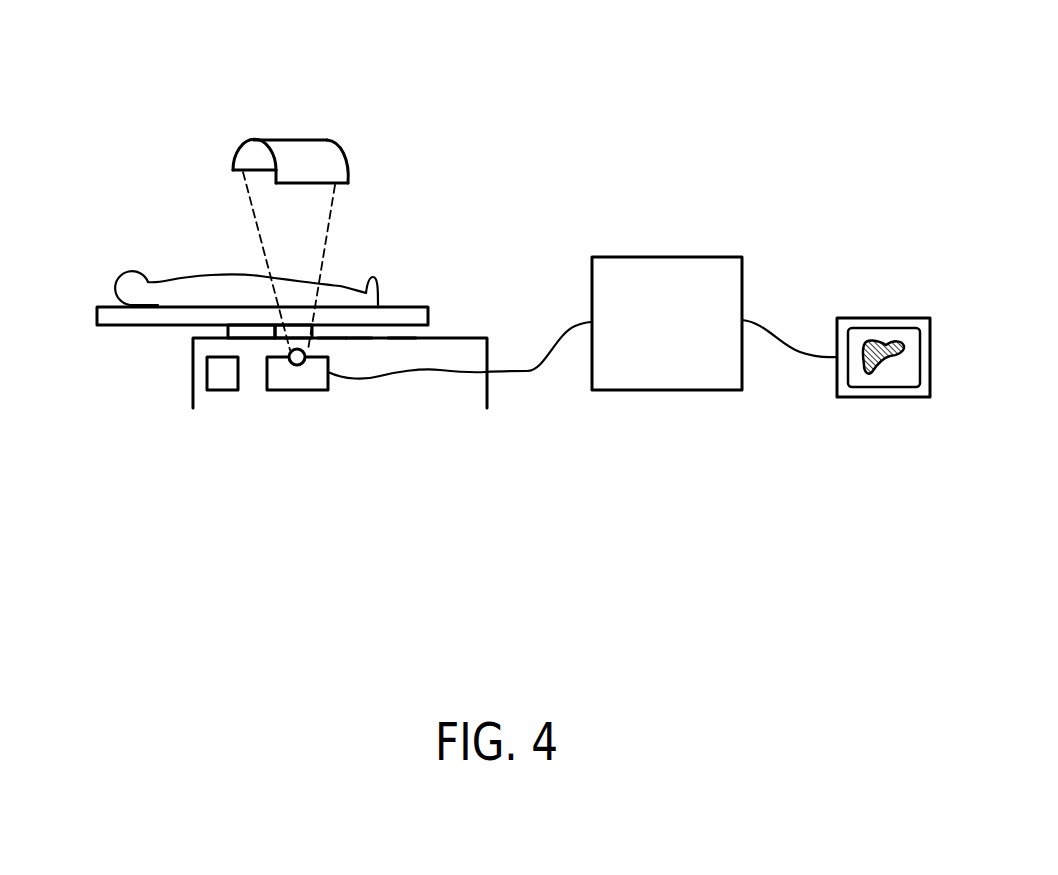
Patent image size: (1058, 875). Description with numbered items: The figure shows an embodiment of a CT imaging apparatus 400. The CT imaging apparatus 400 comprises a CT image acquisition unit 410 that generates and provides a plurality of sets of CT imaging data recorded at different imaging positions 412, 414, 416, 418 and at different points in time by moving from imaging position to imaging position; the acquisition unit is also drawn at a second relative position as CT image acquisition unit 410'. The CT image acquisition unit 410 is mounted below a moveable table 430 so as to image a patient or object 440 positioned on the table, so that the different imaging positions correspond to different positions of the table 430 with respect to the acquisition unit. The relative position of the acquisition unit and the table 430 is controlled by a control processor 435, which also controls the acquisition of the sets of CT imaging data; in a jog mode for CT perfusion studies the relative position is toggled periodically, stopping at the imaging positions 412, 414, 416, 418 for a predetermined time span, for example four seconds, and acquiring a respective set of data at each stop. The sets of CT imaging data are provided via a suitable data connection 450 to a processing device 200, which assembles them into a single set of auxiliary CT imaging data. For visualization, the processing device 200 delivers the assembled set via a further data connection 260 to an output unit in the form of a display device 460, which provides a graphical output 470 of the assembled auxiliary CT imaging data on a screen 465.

The CT imaging apparatus 400 is at (113, 73).
The CT image acquisition unit 410 is at (297, 439).
The CT image acquisition unit 410' is at (261, 231).
The imaging position 412 is at (251, 339).
The imaging position 414 is at (332, 339).
The imaging position 416 is at (357, 339).
The imaging position 418 is at (402, 339).
The moveable table 430 is at (112, 313).
The control processor 435 is at (215, 367).
The patient or object 440 is at (122, 273).
The data connection 450 is at (527, 371).
The processing device 200 is at (665, 258).
The data connection 260 is at (792, 355).
The display device 460 is at (907, 327).
The screen 465 is at (903, 380).
The graphical output 470 is at (863, 373).